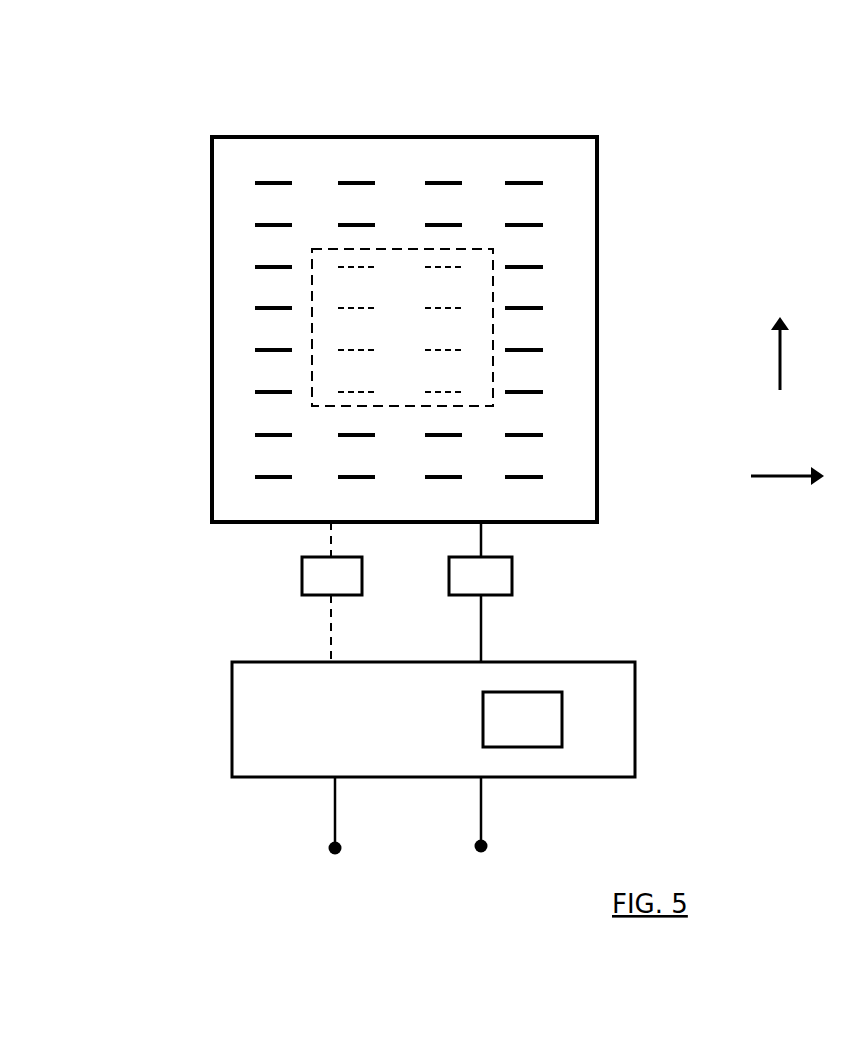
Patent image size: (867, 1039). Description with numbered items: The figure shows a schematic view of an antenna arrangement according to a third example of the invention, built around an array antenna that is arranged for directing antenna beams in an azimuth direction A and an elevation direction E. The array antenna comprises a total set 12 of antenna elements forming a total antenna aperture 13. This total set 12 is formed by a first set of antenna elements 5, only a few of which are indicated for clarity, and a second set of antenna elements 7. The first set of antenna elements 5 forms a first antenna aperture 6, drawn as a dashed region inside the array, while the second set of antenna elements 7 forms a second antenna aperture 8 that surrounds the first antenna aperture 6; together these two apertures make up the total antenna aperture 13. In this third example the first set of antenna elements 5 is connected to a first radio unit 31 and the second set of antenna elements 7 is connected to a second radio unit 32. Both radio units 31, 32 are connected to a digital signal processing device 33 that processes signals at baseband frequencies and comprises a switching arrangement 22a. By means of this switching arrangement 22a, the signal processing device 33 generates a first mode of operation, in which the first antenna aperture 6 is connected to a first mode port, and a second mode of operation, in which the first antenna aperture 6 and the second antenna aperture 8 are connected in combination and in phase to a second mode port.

The total antenna aperture 13 is at (195, 137).
The total set of antenna elements 12 is at (240, 185).
The second set of antenna elements 7 is at (275, 348).
The first antenna aperture 6 is at (457, 248).
The first set of antenna elements 5 is at (443, 393).
The second antenna aperture 8 is at (552, 523).
The elevation direction E is at (777, 358).
The azimuth direction A is at (782, 477).
The first radio unit 31 is at (332, 592).
The second radio unit 32 is at (480, 592).
The digital signal processing device 33 is at (433, 719).
The switching arrangement 22a is at (522, 719).